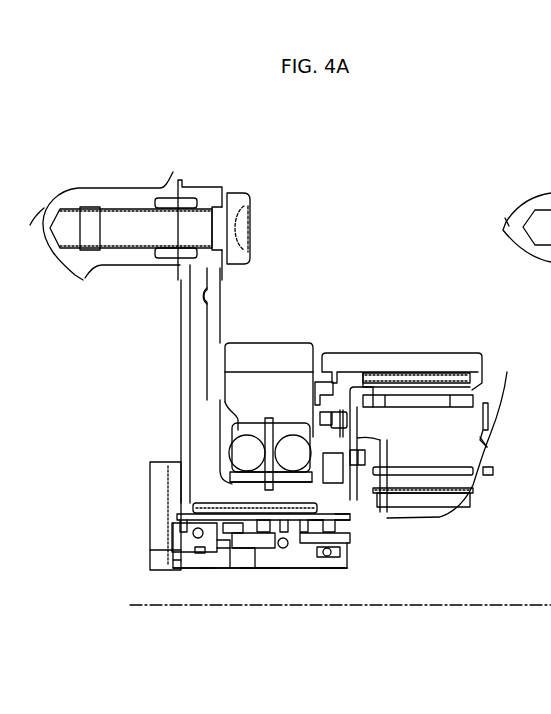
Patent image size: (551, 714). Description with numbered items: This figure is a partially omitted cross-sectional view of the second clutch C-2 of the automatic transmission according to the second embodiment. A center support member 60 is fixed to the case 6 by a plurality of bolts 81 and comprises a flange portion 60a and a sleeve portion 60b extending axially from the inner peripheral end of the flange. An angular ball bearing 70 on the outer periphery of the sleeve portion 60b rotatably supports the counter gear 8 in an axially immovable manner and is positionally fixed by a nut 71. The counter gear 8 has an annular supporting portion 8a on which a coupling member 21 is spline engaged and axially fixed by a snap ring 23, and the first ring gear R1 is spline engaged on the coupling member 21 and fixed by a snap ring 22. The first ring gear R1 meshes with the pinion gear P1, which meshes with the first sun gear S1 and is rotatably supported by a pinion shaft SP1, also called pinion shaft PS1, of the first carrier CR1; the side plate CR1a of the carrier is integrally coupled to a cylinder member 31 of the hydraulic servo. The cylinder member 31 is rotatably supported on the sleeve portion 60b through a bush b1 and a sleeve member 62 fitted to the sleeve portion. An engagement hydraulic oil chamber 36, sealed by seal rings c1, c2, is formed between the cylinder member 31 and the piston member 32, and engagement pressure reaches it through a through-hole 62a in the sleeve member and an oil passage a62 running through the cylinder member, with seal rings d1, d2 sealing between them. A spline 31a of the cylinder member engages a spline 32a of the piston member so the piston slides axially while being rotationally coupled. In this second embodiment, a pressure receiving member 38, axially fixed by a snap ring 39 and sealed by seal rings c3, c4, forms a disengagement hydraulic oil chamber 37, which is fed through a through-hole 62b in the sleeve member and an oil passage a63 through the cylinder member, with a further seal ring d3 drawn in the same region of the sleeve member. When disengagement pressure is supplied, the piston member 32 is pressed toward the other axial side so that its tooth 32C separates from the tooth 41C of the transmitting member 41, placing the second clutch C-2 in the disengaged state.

The case 6 is at (127, 192).
The center support member 60 is at (210, 190).
The bolts 81 is at (255, 200).
The flange portion 60a is at (180, 365).
The counter gear 8 is at (280, 348).
The angular ball bearing 70 is at (258, 411).
The sleeve portion 60b is at (254, 492).
The snap ring 23 is at (320, 420).
The snap ring 22 is at (320, 384).
The coupling member 21 is at (345, 368).
The side plate CR1a is at (370, 392).
The annular supporting portion 8a is at (345, 422).
The spindle SP1 is at (432, 312).
The first ring gear R1 is at (455, 358).
The pinion gear P1 is at (473, 395).
The nut 71 is at (340, 477).
The first carrier CR1 is at (492, 457).
The pinion shaft PS1 is at (483, 463).
The first sun gear S1 is at (467, 513).
The transmitting member 41 is at (160, 484).
The tooth 41C is at (153, 562).
The second clutch C-2 is at (149, 583).
The sleeve member 62 is at (204, 510).
The bush b1 is at (188, 515).
The snap ring 39 is at (192, 533).
The pressure receiving member 38 is at (195, 548).
The tooth 32C is at (181, 569).
The spline 31a is at (218, 549).
The disengagement hydraulic oil chamber 37 is at (232, 560).
The seal ring c4 is at (218, 536).
The gap d3 is at (246, 545).
The through-hole 62b is at (262, 533).
The seal ring d2 is at (286, 548).
The seal ring c2 is at (286, 550).
The engagement hydraulic oil chamber 36 is at (318, 558).
The seal ring c1 is at (331, 556).
The cylinder member 31 is at (332, 553).
The oil passage a62 is at (330, 532).
The through-hole 62a is at (340, 520).
The seal ring d1 is at (333, 519).
The piston member 32 is at (345, 569).
The spline 32a is at (266, 569).
The oil passage a63 is at (250, 569).
The seal ring c3 is at (210, 569).